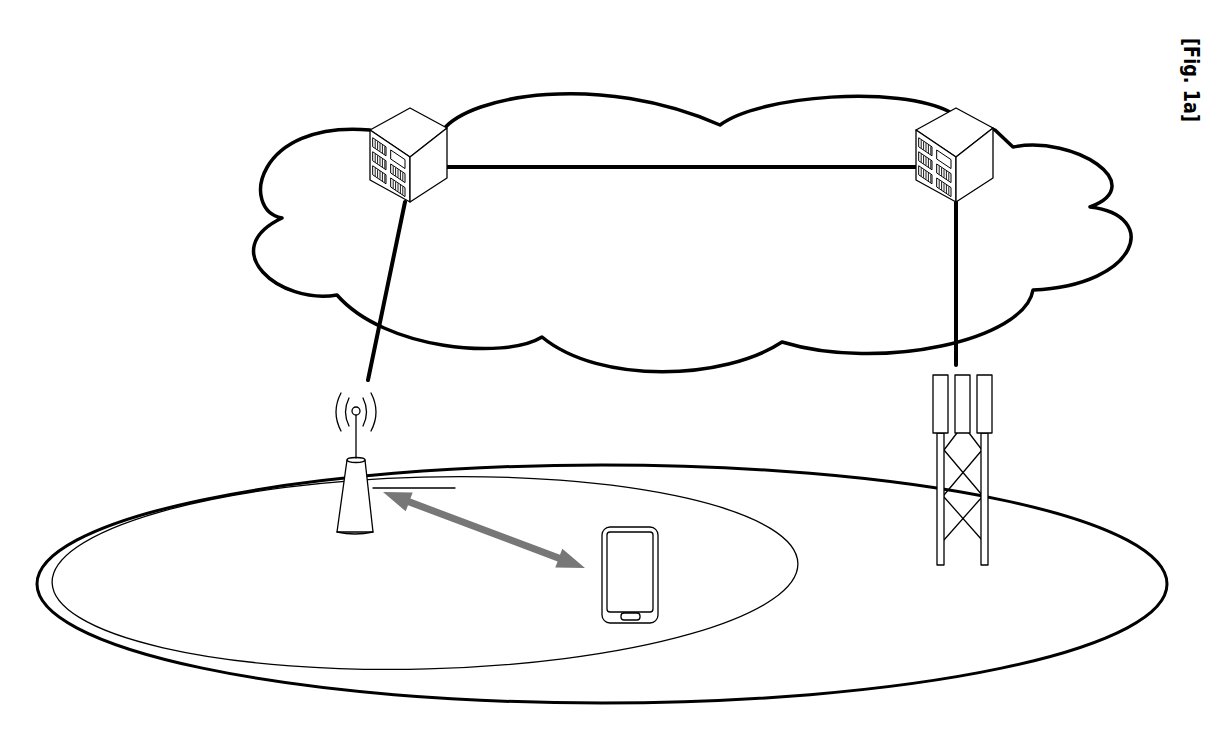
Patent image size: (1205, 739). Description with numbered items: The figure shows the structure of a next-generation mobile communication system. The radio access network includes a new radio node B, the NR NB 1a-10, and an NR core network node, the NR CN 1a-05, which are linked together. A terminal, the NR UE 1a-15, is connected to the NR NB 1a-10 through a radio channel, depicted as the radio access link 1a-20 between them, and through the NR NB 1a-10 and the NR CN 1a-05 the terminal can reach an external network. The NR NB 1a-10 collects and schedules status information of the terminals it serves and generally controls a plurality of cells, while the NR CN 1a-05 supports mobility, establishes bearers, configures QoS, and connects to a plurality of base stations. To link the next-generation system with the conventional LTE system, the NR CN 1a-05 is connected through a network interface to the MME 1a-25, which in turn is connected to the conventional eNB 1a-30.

The NR core network node 1a-05 is at (412, 108).
The MME 1a-25 is at (955, 108).
The NR NB 1a-10 is at (345, 477).
The NR UE 1a-15 is at (628, 527).
The radio access link 1a-20 is at (515, 465).
The eNB 1a-30 is at (993, 422).